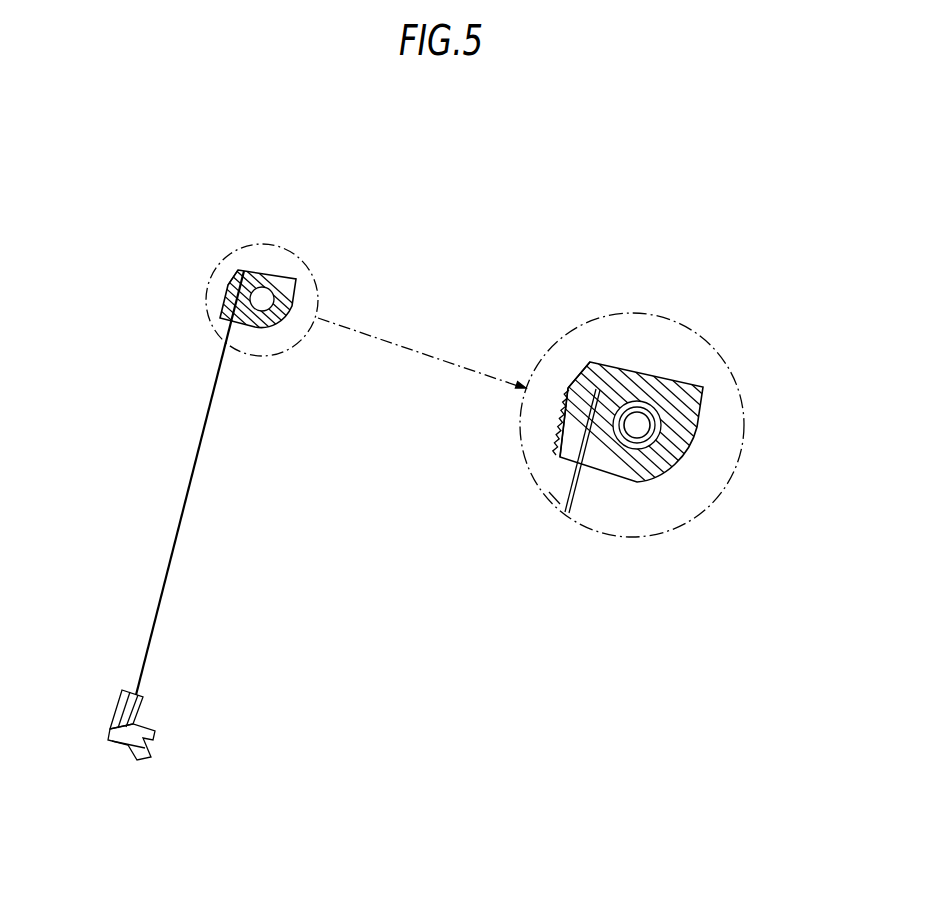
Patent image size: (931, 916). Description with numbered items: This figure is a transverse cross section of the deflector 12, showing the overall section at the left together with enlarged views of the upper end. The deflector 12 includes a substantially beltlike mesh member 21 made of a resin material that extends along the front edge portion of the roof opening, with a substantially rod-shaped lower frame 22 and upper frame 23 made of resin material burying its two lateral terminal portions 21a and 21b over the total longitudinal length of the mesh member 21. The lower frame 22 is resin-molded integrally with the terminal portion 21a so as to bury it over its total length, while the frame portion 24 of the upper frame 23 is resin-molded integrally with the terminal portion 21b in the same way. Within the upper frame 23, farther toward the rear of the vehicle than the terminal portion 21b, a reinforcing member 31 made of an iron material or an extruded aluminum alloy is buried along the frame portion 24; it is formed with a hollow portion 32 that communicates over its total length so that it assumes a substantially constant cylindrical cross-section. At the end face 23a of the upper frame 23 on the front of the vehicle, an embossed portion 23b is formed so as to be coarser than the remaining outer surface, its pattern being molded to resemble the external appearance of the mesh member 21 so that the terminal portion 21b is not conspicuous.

The deflector 12 is at (98, 362).
The mesh member 21 is at (190, 497).
The terminal portion 21a is at (118, 702).
The terminal portion 21b is at (228, 287).
The lower frame 22 is at (143, 710).
The upper frame 23 is at (523, 367).
The end face 23a is at (562, 428).
The embossed portion 23b is at (565, 400).
The frame portion 24 is at (273, 267).
The reinforcing member 31 is at (660, 407).
The hollow portion 32 is at (640, 430).